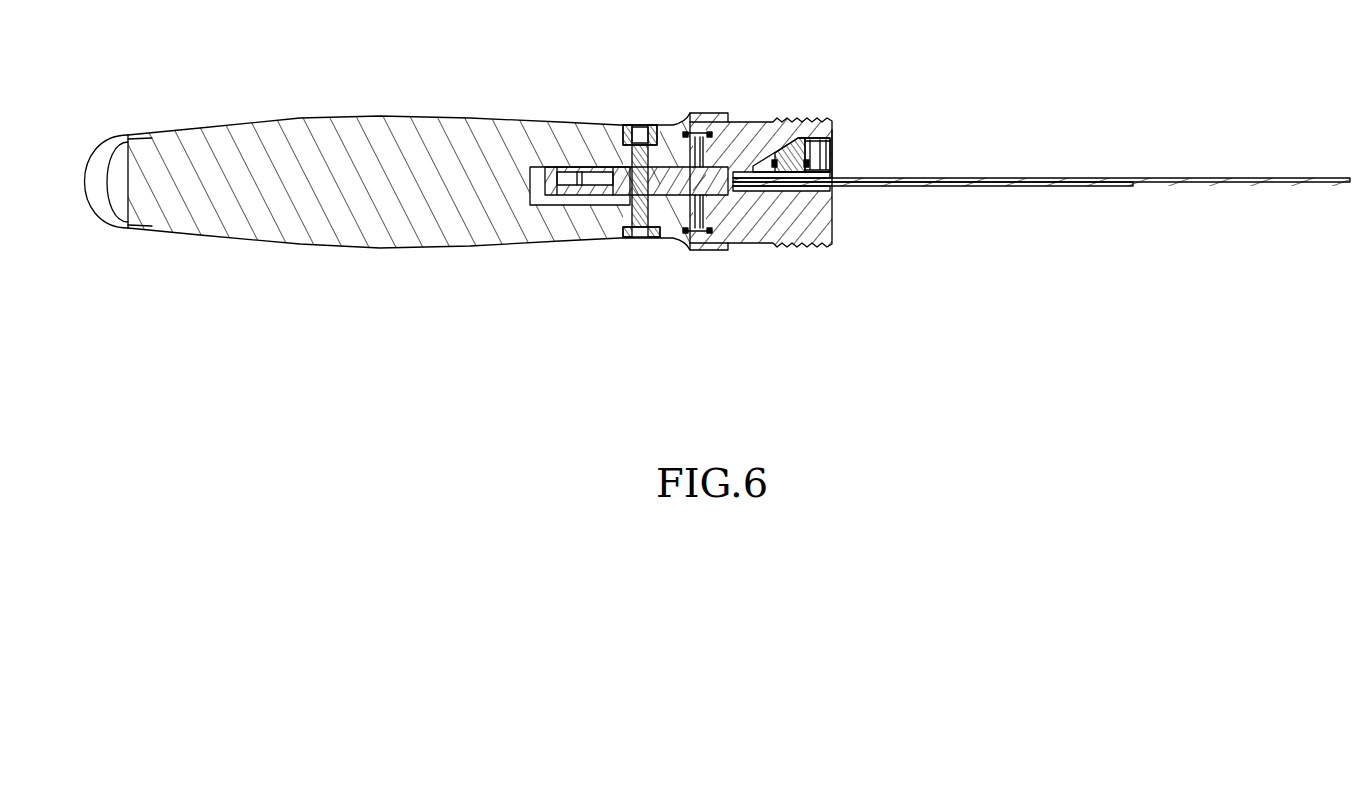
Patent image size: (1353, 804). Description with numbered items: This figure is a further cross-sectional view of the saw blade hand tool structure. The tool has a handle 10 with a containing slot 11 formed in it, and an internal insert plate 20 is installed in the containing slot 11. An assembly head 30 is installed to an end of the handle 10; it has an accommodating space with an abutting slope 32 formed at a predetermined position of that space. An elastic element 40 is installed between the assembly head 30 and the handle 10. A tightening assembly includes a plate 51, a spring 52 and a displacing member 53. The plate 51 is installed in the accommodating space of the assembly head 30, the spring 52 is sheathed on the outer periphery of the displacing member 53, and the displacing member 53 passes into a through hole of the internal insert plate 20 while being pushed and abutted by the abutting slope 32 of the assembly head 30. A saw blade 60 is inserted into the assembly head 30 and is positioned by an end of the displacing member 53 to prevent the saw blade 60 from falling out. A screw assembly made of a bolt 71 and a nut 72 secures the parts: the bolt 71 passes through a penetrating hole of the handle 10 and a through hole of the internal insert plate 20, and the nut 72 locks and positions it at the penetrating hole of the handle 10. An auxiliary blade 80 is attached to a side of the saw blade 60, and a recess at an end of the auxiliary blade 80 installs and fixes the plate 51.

The handle 10 is at (343, 208).
The containing slot 11 is at (533, 183).
The internal insert plate 20 is at (582, 191).
The assembly head 30 is at (750, 128).
The abutting slope 32 is at (835, 133).
The elastic element 40 is at (698, 250).
The plate 51 is at (785, 190).
The spring 52 is at (833, 153).
The displacing member 53 is at (798, 138).
The saw blade 60 is at (1223, 178).
The bolt 71 is at (637, 240).
The nut 72 is at (623, 236).
The auxiliary blade 80 is at (1105, 190).